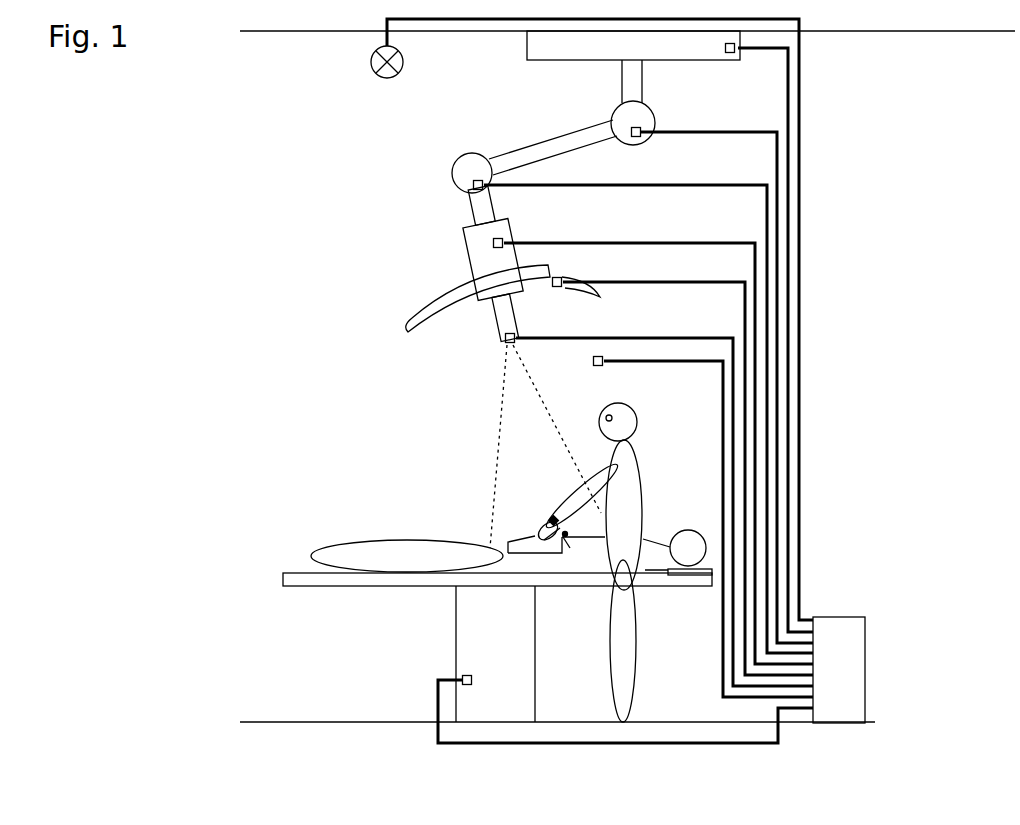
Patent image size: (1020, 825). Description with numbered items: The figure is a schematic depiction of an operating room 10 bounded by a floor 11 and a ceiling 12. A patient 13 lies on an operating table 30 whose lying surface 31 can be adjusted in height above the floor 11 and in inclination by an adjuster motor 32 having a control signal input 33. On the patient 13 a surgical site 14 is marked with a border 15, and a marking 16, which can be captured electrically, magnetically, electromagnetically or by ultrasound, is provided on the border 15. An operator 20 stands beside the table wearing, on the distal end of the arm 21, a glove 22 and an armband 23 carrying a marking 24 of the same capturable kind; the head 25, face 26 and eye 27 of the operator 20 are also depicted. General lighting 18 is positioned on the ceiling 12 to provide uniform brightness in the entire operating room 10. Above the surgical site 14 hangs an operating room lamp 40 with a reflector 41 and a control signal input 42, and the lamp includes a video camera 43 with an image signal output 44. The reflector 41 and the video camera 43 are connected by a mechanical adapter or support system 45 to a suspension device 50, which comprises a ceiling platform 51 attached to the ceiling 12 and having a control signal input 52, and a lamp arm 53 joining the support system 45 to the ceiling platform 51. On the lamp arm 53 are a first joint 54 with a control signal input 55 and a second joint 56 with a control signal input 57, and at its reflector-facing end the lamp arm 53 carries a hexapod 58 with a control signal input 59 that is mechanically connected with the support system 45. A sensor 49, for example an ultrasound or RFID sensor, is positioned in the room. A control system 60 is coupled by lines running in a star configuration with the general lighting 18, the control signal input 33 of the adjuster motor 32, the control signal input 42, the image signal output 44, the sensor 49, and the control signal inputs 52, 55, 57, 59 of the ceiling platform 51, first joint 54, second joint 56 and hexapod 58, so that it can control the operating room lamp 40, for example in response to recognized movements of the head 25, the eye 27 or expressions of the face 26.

The operating room 10 is at (225, 365).
The floor 11 is at (295, 720).
The ceiling 12 is at (250, 33).
The patient 13 is at (511, 520).
The surgical site 14 is at (517, 547).
The border 15 is at (492, 542).
The marking 16 is at (572, 548).
The general lighting 18 is at (372, 62).
The operator 20 is at (632, 500).
The arm 21 is at (570, 510).
The glove 22 is at (537, 530).
The armband 23 is at (565, 540).
The marking 24 is at (553, 522).
The head 25 is at (610, 433).
The face 26 is at (590, 420).
The eye 27 is at (606, 414).
The operating table 30 is at (275, 600).
The lying surface 31 is at (297, 572).
The adjuster motor 32 is at (470, 650).
The control signal input 33 is at (460, 680).
The operating room lamp 40 is at (375, 318).
The reflector 41 is at (415, 318).
The control signal input 42 is at (565, 287).
The video camera 43 is at (500, 322).
The image signal output 44 is at (505, 350).
The support system 45 is at (445, 285).
The sensor 49 is at (603, 364).
The suspension device 50 is at (402, 128).
The ceiling platform 51 is at (535, 35).
The control signal input 52 is at (733, 52).
The lamp arm 53 is at (520, 150).
The first joint 54 is at (620, 100).
The control signal input 55 is at (645, 132).
The second joint 56 is at (452, 172).
The control signal input 57 is at (470, 188).
The hexapod 58 is at (478, 243).
The control signal input 59 is at (505, 240).
The control system 60 is at (830, 620).